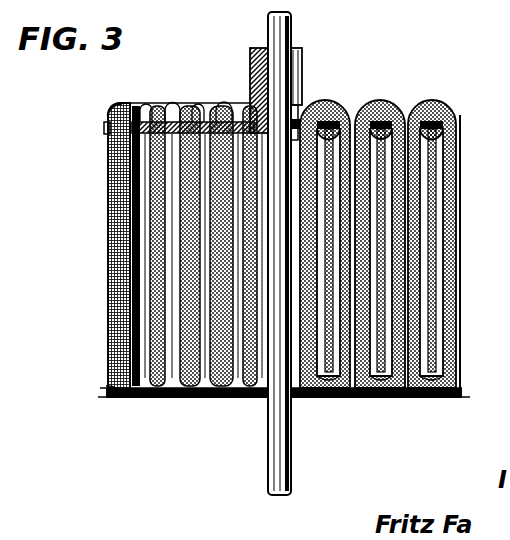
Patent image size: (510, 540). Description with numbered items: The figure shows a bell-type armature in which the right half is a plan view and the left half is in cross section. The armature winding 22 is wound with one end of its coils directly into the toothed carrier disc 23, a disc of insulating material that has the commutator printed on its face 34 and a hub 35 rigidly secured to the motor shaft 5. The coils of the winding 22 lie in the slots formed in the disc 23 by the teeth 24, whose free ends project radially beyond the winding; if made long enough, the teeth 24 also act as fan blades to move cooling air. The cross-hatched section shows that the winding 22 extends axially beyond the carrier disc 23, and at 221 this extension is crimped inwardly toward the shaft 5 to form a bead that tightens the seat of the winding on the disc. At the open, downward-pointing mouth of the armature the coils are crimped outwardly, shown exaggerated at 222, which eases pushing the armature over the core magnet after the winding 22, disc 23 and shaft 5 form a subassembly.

The motor shaft 5 is at (270, 449).
The armature winding 22 is at (109, 222).
The carrier disc 23 is at (212, 110).
The teeth 24 is at (104, 128).
The face 34 is at (174, 112).
The hub 35 is at (286, 54).
The axial extension of the winding 221 is at (111, 107).
The outwardly crimped open end 222 is at (107, 388).